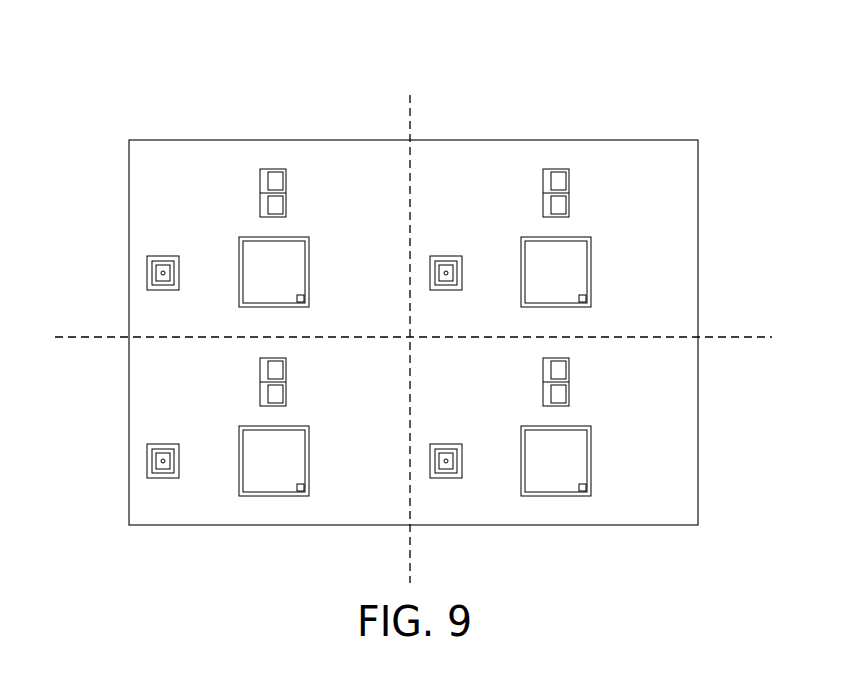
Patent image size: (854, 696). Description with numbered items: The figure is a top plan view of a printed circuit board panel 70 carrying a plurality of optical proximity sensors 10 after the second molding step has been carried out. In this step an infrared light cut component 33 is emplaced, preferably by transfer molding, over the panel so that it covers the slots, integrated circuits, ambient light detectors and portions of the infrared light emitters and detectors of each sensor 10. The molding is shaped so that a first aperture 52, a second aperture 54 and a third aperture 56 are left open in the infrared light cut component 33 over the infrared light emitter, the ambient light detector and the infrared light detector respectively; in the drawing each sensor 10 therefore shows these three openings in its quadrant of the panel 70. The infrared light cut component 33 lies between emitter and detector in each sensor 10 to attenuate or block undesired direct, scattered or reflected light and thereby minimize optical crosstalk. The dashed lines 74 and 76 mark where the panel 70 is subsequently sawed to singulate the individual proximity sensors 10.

The optical proximity sensor 10 is at (413, 336).
The infrared light cut component 33 is at (148, 214).
The first aperture 52 is at (167, 266).
The second aperture 54 is at (252, 256).
The third aperture 56 is at (273, 181).
The printed circuit board panel 70 is at (772, 36).
The singulation line 74 is at (745, 337).
The singulation line 76 is at (410, 108).